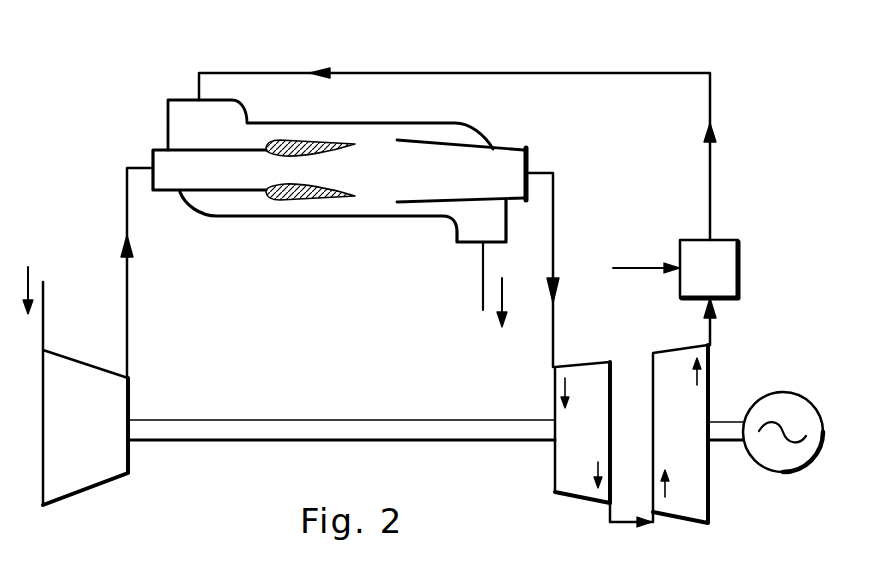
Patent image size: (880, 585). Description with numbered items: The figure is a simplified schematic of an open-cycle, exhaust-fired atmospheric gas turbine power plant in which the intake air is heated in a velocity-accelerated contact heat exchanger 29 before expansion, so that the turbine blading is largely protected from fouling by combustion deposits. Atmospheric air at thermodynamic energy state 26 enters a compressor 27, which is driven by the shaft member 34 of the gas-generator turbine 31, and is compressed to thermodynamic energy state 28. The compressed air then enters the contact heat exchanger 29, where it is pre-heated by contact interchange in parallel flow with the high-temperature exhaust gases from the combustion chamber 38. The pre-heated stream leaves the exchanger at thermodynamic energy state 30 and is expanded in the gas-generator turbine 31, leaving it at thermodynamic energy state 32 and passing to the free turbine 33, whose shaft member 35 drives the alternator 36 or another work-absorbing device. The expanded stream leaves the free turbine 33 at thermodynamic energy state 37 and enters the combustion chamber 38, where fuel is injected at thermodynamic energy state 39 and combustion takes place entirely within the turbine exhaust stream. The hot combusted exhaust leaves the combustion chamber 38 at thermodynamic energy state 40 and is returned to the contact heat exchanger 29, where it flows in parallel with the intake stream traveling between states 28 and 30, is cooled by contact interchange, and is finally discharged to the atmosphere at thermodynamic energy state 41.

The thermodynamic energy state of atmospheric intake air 26 is at (37, 323).
The compressor 27 is at (103, 447).
The thermodynamic energy state of compressed intake air 28 is at (124, 337).
The contact heat exchanger 29 is at (298, 213).
The thermodynamic energy state of pre-heated intake fluid 30 is at (551, 195).
The gas-generator turbine 31 is at (595, 445).
The thermodynamic energy state of gas-generator turbine exhaust 32 is at (628, 525).
The free turbine 33 is at (693, 445).
The shaft member 34 is at (326, 425).
The shaft member 35 is at (725, 427).
The alternator 36 is at (793, 395).
The thermodynamic energy state of free turbine exhaust 37 is at (705, 330).
The combustion chamber 38 is at (723, 283).
The thermodynamic energy state of injected fuel 39 is at (637, 275).
The thermodynamic energy state of combusted exhaust fluid 40 is at (249, 78).
The thermodynamic energy state of discharged exhaust 41 is at (488, 272).